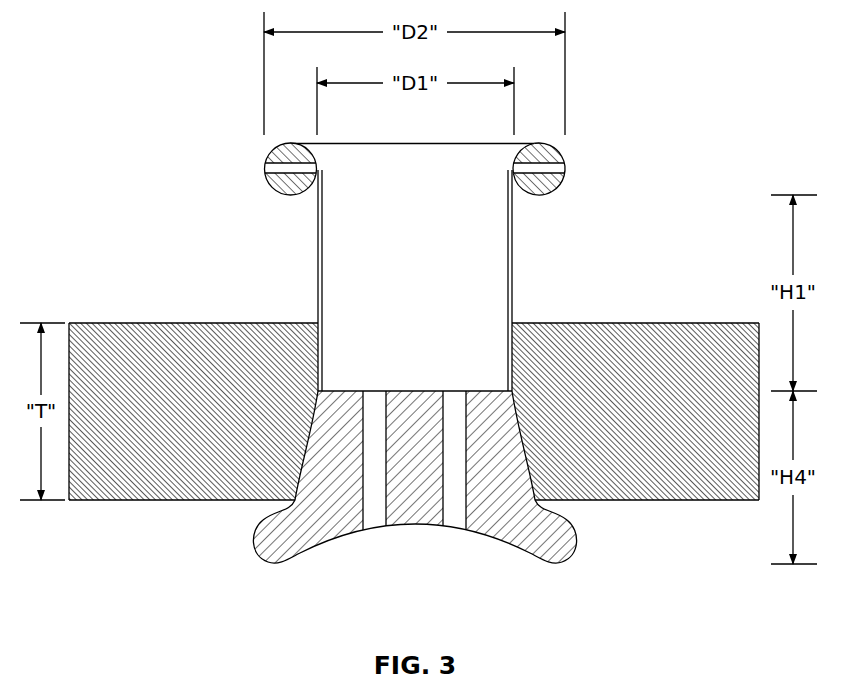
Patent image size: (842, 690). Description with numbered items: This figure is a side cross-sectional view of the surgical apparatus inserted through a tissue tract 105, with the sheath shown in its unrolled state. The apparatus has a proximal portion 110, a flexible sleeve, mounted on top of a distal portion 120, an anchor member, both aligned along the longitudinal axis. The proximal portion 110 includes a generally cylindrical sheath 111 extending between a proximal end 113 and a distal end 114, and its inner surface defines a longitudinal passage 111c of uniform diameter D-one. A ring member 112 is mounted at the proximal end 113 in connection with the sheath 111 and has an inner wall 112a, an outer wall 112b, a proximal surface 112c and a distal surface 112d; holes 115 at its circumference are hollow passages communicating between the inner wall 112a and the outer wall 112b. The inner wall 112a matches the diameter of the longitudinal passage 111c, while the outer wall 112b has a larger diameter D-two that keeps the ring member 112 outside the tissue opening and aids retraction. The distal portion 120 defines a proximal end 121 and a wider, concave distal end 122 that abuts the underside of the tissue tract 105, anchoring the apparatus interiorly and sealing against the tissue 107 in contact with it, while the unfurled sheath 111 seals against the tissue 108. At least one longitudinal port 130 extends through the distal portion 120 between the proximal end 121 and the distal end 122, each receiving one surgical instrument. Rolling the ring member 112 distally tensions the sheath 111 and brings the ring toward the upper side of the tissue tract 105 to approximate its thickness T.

The tissue tract 105 is at (140, 323).
The tissue 107 is at (310, 448).
The tissue 108 is at (290, 323).
The proximal portion 110 is at (429, 248).
The sheath 111 is at (512, 305).
The longitudinal passage 111c is at (393, 190).
The ring member 112 is at (475, 148).
The inner wall 112a is at (518, 150).
The outer wall 112b is at (565, 160).
The proximal surface 112c is at (548, 144).
The distal surface 112d is at (537, 195).
The proximal end 113 is at (388, 143).
The distal end 114 is at (348, 390).
The hole 115 is at (540, 168).
The distal portion 120 is at (442, 503).
The proximal end 121 is at (482, 392).
The distal end 122 is at (565, 562).
The longitudinal port 130 is at (414, 465).